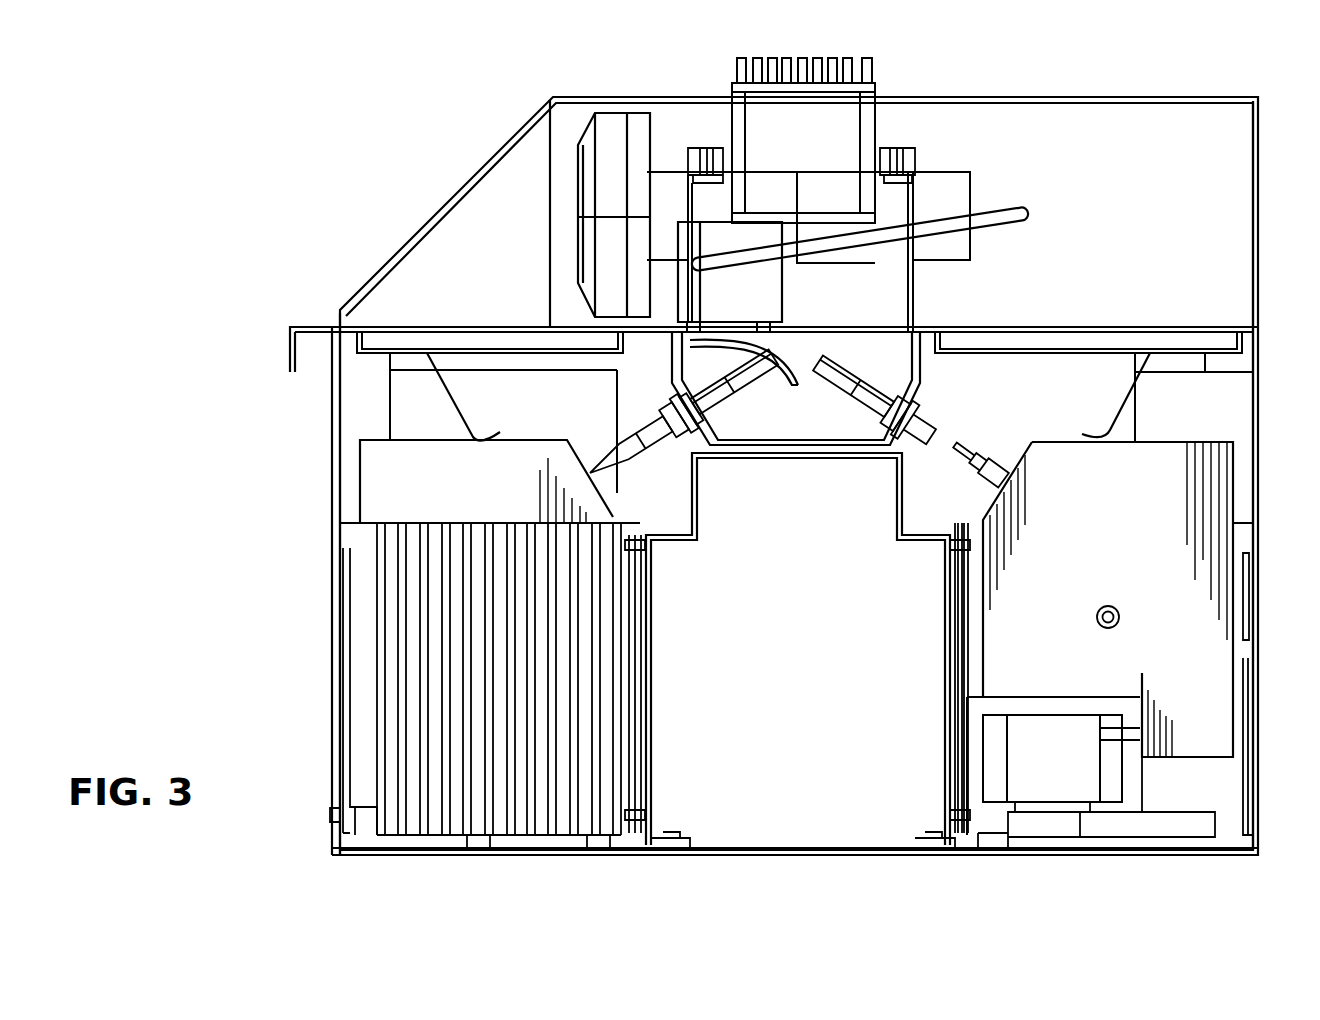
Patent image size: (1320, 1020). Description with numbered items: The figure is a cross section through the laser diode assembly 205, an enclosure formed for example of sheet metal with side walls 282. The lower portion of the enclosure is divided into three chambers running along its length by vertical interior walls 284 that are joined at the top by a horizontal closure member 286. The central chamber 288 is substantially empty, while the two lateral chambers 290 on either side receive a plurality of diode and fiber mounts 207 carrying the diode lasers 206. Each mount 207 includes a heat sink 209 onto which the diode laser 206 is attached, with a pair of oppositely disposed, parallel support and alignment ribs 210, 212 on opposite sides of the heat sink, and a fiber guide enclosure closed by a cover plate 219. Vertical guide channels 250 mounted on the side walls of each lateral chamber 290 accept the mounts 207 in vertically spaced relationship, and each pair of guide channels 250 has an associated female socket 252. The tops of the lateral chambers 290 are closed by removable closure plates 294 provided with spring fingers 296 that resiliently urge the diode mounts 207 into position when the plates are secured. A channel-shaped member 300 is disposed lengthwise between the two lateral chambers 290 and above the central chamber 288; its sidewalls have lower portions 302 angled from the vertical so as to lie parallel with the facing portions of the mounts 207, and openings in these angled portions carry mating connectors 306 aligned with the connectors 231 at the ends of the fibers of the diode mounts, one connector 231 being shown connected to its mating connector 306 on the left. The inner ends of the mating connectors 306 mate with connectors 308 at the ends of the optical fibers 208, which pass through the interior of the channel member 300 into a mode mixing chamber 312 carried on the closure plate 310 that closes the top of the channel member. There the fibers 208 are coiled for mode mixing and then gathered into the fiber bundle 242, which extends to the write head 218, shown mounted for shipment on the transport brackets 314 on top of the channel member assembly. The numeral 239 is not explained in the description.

The laser diode assembly 205 is at (452, 160).
The diode laser 206 is at (1083, 764).
The diode and fiber mount 207 is at (498, 502).
The optical fibers 208 is at (754, 371).
The heat sink 209 is at (578, 750).
The support and alignment rib 210 is at (628, 671).
The support and alignment rib 212 is at (1240, 596).
The write head 218 is at (602, 270).
The cover plate 219 is at (990, 663).
The connector 231 is at (672, 466).
The tube 239 is at (1085, 805).
The fiber bundle 242 is at (1005, 216).
The vertical guide channels 250 is at (633, 646).
The female socket 252 is at (530, 836).
The side walls 282 is at (332, 480).
The vertical interior walls 284 is at (640, 733).
The horizontal closure member 286 is at (797, 458).
The central chamber 288 is at (798, 585).
The lateral chambers 290 is at (540, 412).
The removable closure plates 294 is at (458, 350).
The spring fingers 296 is at (458, 403).
The channel-shaped member 300 is at (798, 444).
The angled lower sidewall portions 302 is at (672, 390).
The mating connector 306 is at (696, 450).
The connectors 308 is at (715, 401).
The closure plate 310 is at (840, 332).
The mode mixing chamber 312 is at (753, 309).
The transport brackets 314 is at (688, 176).